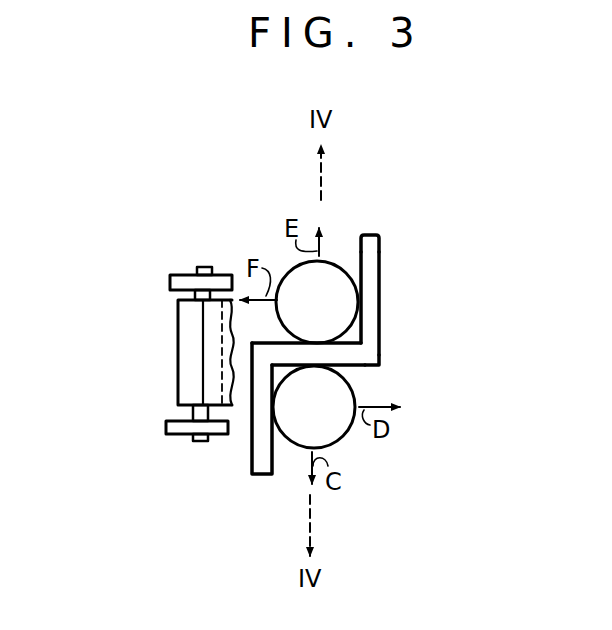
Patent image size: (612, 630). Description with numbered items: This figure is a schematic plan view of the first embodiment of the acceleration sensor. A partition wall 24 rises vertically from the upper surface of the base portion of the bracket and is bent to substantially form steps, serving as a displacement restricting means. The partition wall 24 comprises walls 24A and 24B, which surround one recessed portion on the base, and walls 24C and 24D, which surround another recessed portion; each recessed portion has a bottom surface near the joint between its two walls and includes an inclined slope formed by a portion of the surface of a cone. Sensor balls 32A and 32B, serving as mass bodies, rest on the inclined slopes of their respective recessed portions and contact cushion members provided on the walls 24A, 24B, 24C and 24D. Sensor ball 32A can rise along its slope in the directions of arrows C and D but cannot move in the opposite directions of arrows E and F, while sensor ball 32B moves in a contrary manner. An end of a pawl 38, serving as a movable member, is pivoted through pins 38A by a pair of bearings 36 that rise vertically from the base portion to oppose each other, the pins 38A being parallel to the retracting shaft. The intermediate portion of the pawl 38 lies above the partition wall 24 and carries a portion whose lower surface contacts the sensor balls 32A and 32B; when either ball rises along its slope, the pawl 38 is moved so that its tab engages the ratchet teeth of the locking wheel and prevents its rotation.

The partition wall 24 is at (293, 382).
The wall 24A is at (279, 459).
The wall 24B is at (366, 368).
The wall 24C is at (263, 343).
The wall 24D is at (360, 241).
The sensor ball 32A is at (338, 427).
The sensor ball 32B is at (327, 275).
The bearing 36 is at (188, 276).
The pawl 38 is at (176, 379).
The pin 38A is at (205, 266).